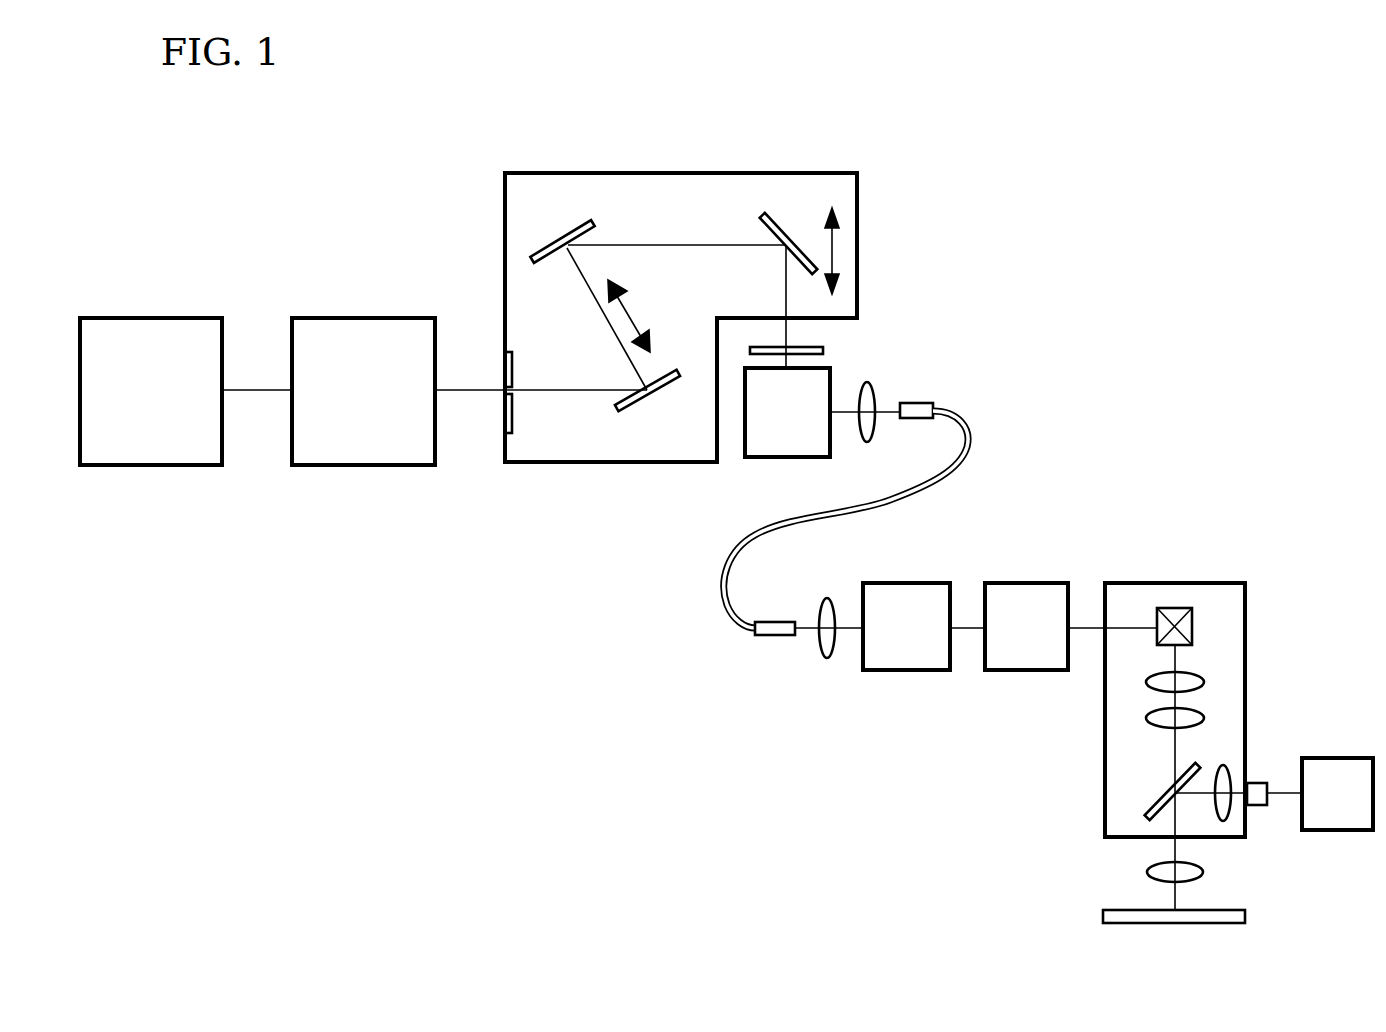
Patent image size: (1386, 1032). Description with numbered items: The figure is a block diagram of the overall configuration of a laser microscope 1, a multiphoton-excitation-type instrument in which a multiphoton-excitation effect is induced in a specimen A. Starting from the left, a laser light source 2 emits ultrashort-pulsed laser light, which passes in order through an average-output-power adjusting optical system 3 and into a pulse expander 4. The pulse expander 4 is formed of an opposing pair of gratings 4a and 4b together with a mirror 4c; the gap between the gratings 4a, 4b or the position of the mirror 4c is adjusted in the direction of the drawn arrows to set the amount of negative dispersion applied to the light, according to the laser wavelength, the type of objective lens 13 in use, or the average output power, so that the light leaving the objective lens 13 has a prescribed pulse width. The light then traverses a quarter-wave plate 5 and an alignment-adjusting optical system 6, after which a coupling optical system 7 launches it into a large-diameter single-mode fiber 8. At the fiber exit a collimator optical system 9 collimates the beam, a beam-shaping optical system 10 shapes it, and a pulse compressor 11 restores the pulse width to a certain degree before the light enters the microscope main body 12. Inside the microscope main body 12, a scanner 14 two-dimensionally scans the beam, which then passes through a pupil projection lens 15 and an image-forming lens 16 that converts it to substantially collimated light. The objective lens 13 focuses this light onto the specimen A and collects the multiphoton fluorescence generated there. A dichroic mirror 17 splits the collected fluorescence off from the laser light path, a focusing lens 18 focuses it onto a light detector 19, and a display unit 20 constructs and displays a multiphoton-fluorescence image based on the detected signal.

The laser microscope 1 is at (1128, 146).
The laser light source 2 is at (155, 318).
The average-output-power adjusting optical system 3 is at (367, 318).
The pulse expander 4 is at (706, 173).
The grating 4a is at (627, 410).
The grating 4b is at (578, 225).
The mirror 4c is at (784, 215).
The quarter-wave plate 5 is at (823, 350).
The alignment-adjusting optical system 6 is at (787, 457).
The coupling optical system 7 is at (873, 392).
The large-diameter single-mode fiber 8 is at (967, 448).
The collimator optical system 9 is at (827, 660).
The beam-shaping optical system 10 is at (912, 670).
The pulse compressor 11 is at (1030, 670).
The microscope main body 12 is at (1172, 583).
The objective lens 13 is at (1150, 871).
The scanner 14 is at (1195, 617).
The pupil projection lens 15 is at (1200, 682).
The image-forming lens 16 is at (1200, 715).
The dichroic mirror 17 is at (1150, 804).
The focusing lens 18 is at (1225, 822).
The light detector 19 is at (1258, 805).
The display unit 20 is at (1350, 830).
The specimen A is at (1103, 912).